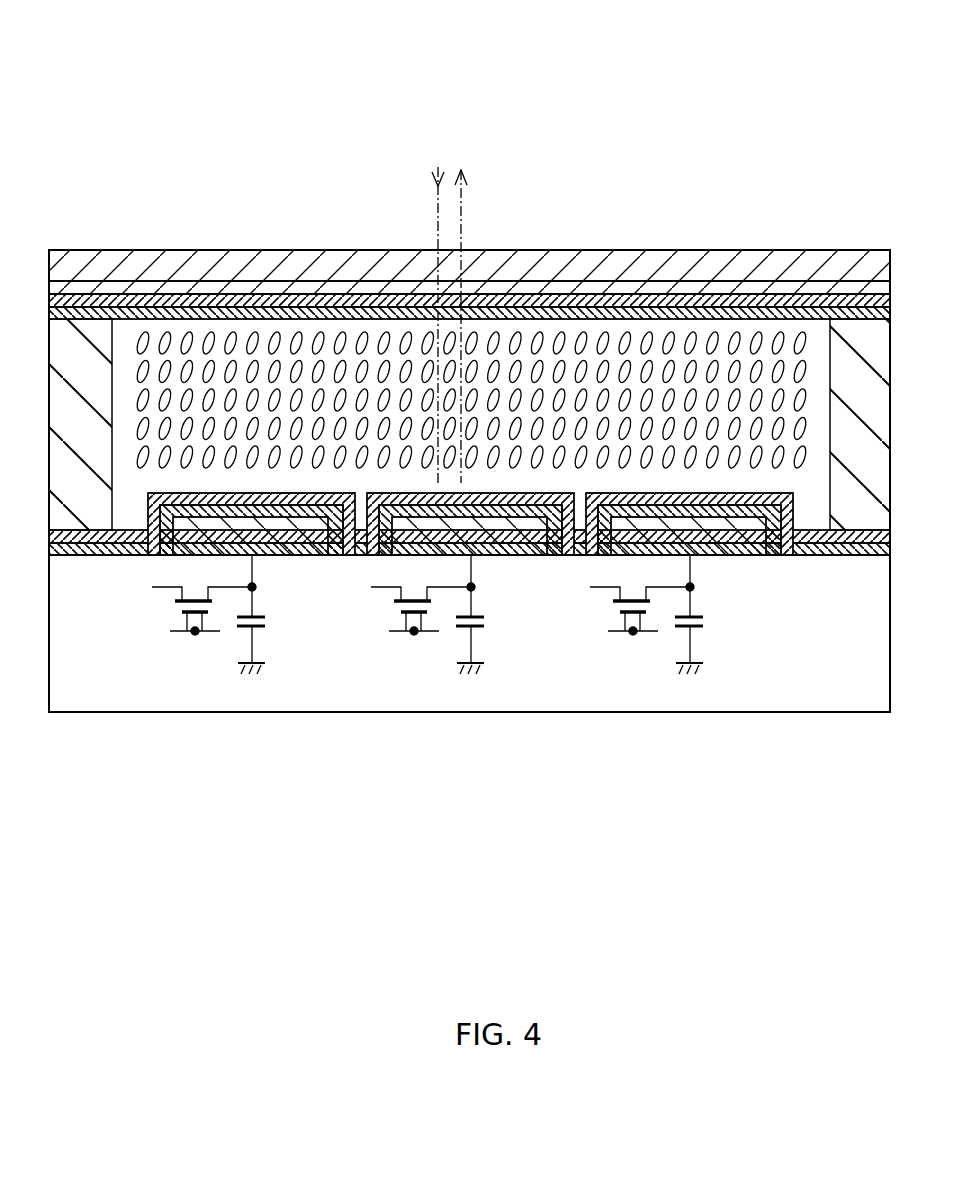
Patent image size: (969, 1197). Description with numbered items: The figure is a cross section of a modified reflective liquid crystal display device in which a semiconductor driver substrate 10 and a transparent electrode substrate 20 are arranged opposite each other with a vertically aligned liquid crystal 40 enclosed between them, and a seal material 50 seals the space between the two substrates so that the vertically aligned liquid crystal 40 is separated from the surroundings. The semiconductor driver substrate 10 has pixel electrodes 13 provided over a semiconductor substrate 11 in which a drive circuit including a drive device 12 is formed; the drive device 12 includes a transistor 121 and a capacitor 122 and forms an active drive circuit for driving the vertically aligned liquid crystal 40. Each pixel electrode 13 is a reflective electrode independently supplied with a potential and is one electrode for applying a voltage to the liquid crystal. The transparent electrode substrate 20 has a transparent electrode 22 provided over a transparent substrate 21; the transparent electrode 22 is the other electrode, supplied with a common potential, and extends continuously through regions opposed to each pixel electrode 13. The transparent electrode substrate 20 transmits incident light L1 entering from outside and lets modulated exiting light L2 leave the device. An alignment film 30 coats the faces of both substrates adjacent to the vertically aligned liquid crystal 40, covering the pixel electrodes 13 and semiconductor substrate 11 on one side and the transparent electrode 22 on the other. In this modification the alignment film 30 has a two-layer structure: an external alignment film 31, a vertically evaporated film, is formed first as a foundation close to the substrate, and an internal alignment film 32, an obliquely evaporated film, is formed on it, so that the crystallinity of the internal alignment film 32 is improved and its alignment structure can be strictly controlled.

The semiconductor driver substrate 10 is at (469, 710).
The semiconductor substrate 11 is at (640, 695).
The drive device 12 is at (399, 664).
The transistor 121 is at (185, 634).
The capacitor 122 is at (258, 630).
The pixel electrode 13 is at (528, 540).
The transparent electrode substrate 20 is at (469, 372).
The transparent substrate 21 is at (575, 252).
The transparent electrode 22 is at (683, 292).
The alignment film 30 is at (469, 480).
The external alignment film 31 is at (757, 303).
The internal alignment film 32 is at (817, 318).
The vertically aligned liquid crystal 40 is at (262, 345).
The seal material 50 is at (88, 330).
The incident light L1 is at (436, 219).
The exiting light L2 is at (463, 219).